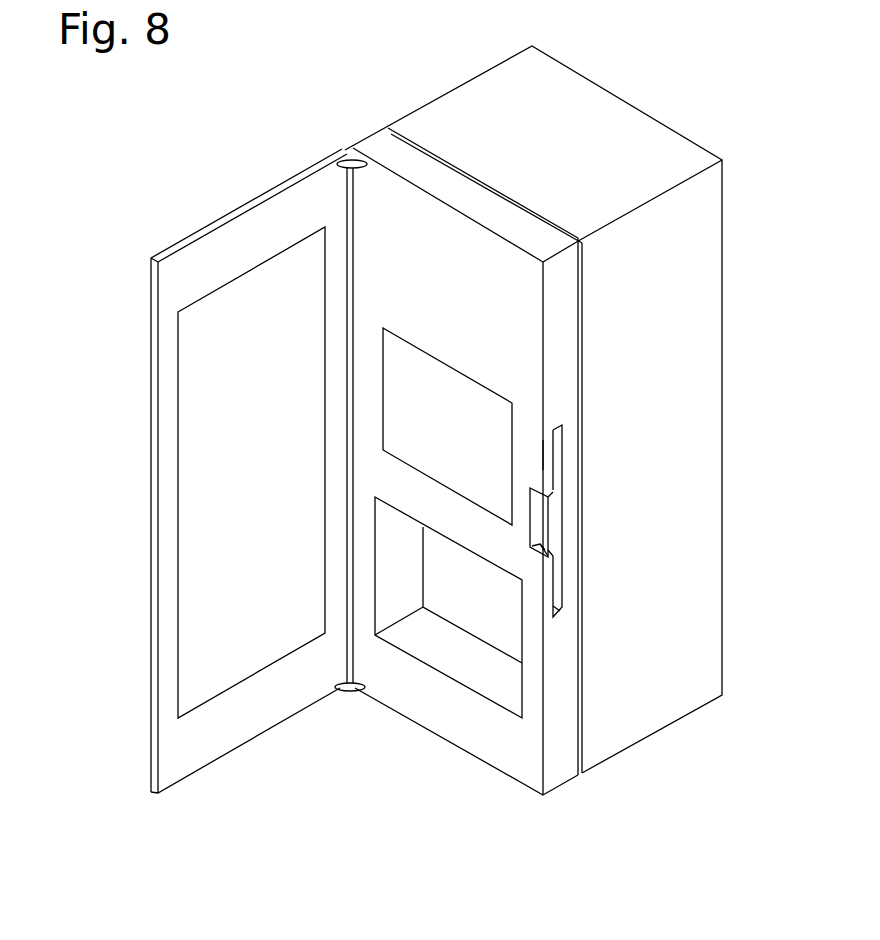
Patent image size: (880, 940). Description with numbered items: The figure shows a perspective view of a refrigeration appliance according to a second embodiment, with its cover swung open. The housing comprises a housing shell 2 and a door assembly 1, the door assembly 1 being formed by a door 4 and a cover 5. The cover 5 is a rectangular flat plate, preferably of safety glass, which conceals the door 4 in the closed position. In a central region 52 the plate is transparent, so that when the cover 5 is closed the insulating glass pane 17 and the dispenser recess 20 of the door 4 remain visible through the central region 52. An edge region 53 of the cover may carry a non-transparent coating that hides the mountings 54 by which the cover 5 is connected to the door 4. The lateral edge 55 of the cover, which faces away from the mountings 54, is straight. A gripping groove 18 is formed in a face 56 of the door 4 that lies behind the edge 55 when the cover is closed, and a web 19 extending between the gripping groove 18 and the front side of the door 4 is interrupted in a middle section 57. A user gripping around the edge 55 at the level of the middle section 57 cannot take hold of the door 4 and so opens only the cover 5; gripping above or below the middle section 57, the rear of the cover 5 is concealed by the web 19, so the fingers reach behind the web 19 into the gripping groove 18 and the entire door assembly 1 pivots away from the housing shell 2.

The door assembly 1 is at (290, 110).
The housing shell 2 is at (460, 125).
The door 4 is at (395, 220).
The cover 5 is at (146, 354).
The insulating glass pane 17 is at (468, 398).
The gripping groove 18 is at (558, 455).
The web 19 is at (537, 453).
The dispenser recess 20 is at (437, 647).
The central region 52 is at (195, 516).
The edge region 53 is at (170, 738).
The mountings 54 is at (352, 160).
The lateral edge 55 is at (153, 325).
The face 56 is at (567, 380).
The middle section 57 is at (537, 512).